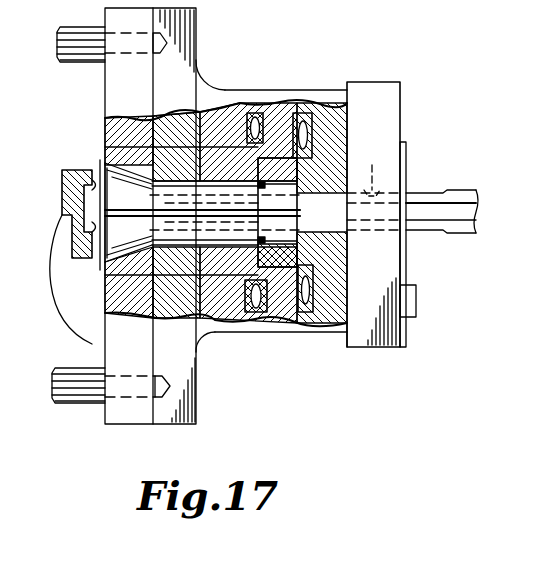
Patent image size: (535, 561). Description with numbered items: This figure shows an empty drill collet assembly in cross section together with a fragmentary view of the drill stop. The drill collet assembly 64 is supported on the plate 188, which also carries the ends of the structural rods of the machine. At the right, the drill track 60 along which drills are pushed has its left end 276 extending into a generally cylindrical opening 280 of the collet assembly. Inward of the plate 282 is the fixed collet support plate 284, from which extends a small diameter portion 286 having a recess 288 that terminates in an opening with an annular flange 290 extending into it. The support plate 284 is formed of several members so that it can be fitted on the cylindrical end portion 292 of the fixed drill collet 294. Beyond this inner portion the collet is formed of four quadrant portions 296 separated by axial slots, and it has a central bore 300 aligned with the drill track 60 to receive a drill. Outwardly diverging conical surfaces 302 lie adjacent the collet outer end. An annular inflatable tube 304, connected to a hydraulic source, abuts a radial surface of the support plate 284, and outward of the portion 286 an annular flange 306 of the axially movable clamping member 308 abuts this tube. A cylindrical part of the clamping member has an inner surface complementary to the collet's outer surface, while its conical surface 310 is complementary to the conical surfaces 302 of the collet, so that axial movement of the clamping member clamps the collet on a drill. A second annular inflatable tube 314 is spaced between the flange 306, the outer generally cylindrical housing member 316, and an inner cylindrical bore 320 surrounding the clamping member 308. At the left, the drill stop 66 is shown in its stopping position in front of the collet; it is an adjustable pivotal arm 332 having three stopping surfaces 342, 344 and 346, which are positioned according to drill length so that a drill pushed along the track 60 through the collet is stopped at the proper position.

The drill track 60 is at (459, 192).
The drill collet assembly 64 is at (258, 91).
The drill stop 66 is at (71, 284).
The plate 188 is at (128, 428).
The left end of the track 276 is at (223, 98).
The cylindrical opening 280 is at (369, 169).
The plate 282 is at (384, 347).
The fixed collet support plate 284 is at (337, 325).
The small diameter portion 286 is at (283, 325).
The recess 288 is at (300, 246).
The annular flange 290 is at (300, 258).
The cylindrical end portion 292 is at (304, 116).
The fixed drill collet 294 is at (100, 164).
The quadrant portions 296 is at (176, 118).
The central bore 300 is at (109, 314).
The conical surfaces 302 is at (104, 344).
The annular inflatable tube 304 is at (348, 127).
The annular flange 306 is at (260, 118).
The clamping member 308 is at (208, 314).
The conical surface 310 is at (103, 160).
The second annular inflatable tube 314 is at (254, 322).
The outer generally cylindrical housing member 316 is at (262, 322).
The inner cylindrical bore 320 is at (173, 318).
The arm 332 is at (101, 268).
The stopping surface 342 is at (101, 165).
The stopping surface 344 is at (97, 235).
The stopping surface 346 is at (100, 252).